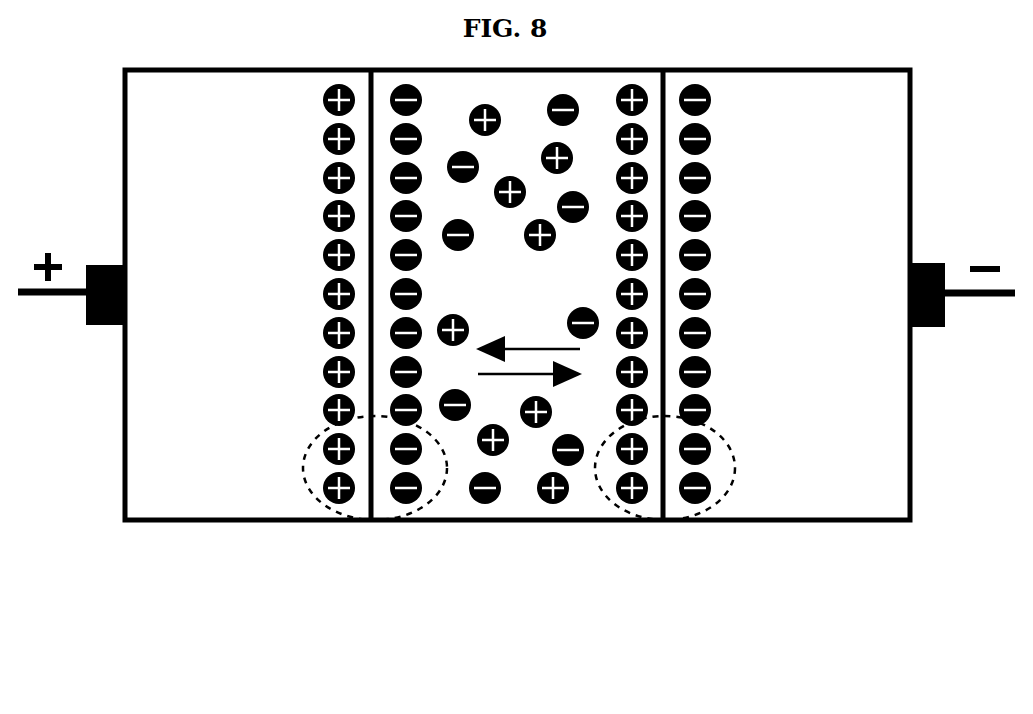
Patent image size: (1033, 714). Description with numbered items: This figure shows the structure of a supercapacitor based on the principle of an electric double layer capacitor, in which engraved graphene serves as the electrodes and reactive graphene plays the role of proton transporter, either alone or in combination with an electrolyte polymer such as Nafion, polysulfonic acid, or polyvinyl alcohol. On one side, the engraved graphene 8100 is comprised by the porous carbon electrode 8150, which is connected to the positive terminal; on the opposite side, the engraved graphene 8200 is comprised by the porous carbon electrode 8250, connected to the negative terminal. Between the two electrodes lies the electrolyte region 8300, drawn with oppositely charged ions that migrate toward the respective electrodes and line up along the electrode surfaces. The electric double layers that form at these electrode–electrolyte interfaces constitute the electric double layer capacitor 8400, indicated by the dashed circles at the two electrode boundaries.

The engraved graphene 8100 is at (248, 295).
The porous carbon electrode 8150 is at (139, 289).
The engraved graphene 8200 is at (786, 295).
The porous carbon electrode 8250 is at (891, 295).
The electrolyte 8300 is at (517, 295).
The electric double layer capacitor 8400 is at (607, 544).